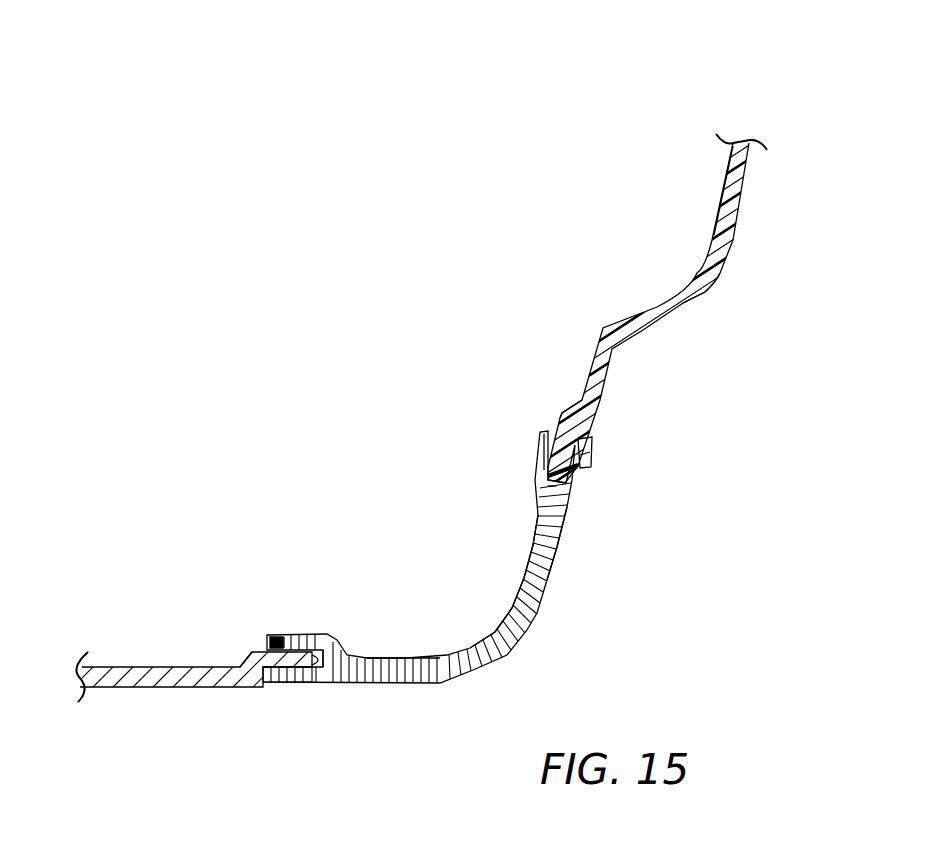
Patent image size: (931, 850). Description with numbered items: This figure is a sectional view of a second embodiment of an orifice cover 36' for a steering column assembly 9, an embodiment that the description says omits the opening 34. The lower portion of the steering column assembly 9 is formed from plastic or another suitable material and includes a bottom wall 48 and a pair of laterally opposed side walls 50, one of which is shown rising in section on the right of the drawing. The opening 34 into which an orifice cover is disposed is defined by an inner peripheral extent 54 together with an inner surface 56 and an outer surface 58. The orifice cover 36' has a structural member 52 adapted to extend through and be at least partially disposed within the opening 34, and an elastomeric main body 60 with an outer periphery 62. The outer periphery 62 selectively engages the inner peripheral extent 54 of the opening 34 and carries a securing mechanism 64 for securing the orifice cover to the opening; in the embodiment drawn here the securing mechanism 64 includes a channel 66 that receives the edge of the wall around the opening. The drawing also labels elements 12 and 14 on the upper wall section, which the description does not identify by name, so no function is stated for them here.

The steering column assembly 9 is at (752, 70).
The outer panel 12 is at (727, 172).
The body panel 14 is at (748, 200).
The opening 34 is at (456, 610).
The orifice cover 36' is at (487, 557).
The bottom wall 48 is at (147, 690).
The side walls 50 is at (708, 292).
The structural member 52 is at (413, 684).
The inner peripheral extent 54 is at (570, 500).
The inner surface 56 is at (562, 412).
The outer surface 58 is at (592, 447).
The elastomeric main body 60 is at (512, 622).
The outer periphery 62 is at (540, 492).
The securing mechanism 64 is at (540, 452).
The channel 66 is at (541, 465).